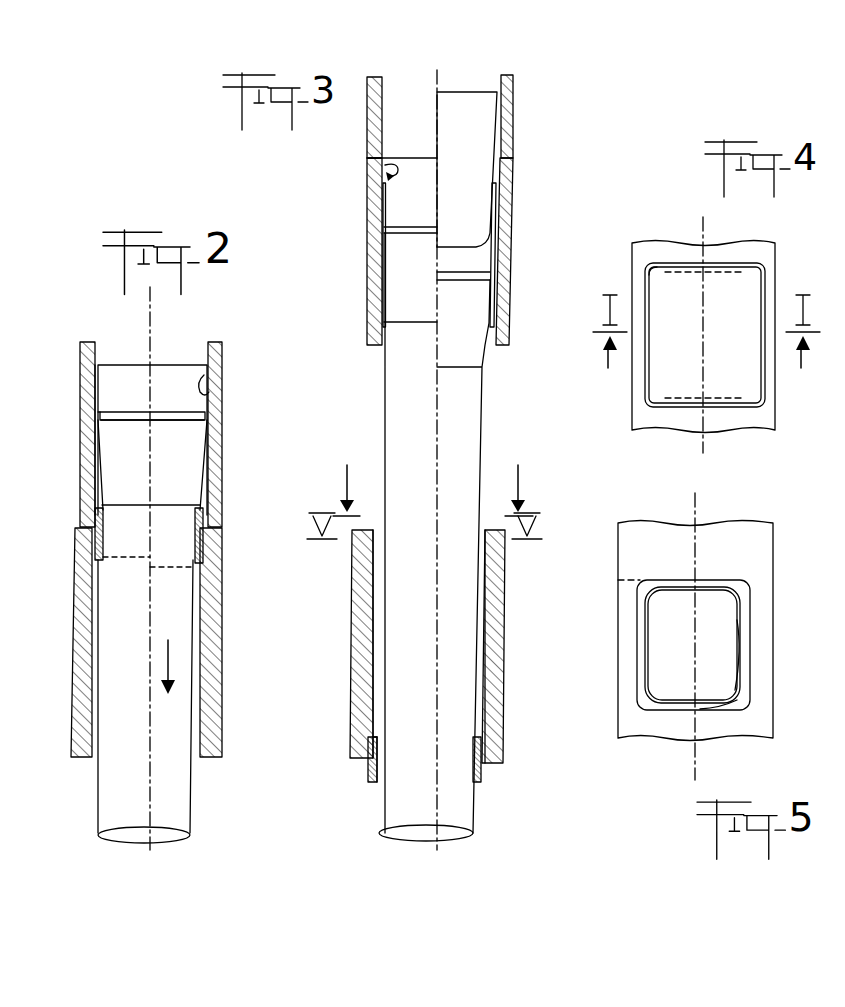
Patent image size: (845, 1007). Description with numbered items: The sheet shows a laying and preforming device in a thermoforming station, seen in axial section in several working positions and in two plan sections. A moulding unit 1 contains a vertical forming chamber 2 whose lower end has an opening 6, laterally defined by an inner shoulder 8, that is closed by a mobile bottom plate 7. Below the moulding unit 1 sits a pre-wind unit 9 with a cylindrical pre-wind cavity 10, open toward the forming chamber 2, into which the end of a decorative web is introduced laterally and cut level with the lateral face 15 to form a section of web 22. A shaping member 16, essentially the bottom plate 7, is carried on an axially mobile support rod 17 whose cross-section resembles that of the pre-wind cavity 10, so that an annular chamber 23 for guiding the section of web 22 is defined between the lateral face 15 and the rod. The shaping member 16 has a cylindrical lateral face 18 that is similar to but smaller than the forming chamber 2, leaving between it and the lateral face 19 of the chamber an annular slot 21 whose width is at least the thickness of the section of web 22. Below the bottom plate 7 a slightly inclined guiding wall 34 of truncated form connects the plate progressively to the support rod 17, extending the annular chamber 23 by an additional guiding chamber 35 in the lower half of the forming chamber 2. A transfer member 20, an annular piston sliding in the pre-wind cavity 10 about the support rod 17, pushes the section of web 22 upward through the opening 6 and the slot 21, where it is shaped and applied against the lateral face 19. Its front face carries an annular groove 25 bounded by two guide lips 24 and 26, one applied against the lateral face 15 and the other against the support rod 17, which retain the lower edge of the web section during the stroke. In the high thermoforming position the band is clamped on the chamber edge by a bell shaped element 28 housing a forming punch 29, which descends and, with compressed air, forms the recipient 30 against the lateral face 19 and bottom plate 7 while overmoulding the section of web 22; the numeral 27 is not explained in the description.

In FIG. 2, the moulding unit 1 is at (80, 395).
In FIG. 4, the moulding unit 1 is at (745, 252).
In FIG. 2, the forming chamber 2 is at (195, 352).
In FIG. 4, the forming chamber 2 is at (705, 335).
In FIG. 3, the opening 6 is at (380, 345).
In FIG. 4, the bottom plate 7 is at (705, 335).
In FIG. 4, the inner shoulder 8 is at (648, 328).
In FIG. 5, the pre-wind unit 9 is at (742, 728).
In FIG. 2, the pre-wind cavity 10 is at (253, 642).
In FIG. 5, the pre-wind cavity 10 is at (743, 590).
In FIG. 3, the lateral face 15 is at (478, 606).
In FIG. 5, the lateral face 15 is at (745, 698).
In FIG. 2, the shaping member 16 is at (164, 405).
In FIG. 3, the shaping member 16 is at (427, 224).
In FIG. 4, the shaping member 16 is at (705, 335).
In FIG. 2, the support rod 17 is at (175, 808).
In FIG. 3, the support rod 17 is at (395, 440).
In FIG. 5, the support rod 17 is at (718, 647).
In FIG. 2, the cylindrical lateral face 18 is at (115, 412).
In FIG. 3, the lateral face 19 is at (385, 168).
In FIG. 2, the transfer member 20 is at (203, 549).
In FIG. 3, the transfer member 20 is at (370, 777).
In FIG. 2, the annular slot 21 is at (97, 417).
In FIG. 2, the section of web 22 is at (212, 375).
In FIG. 3, the section of web 22 is at (382, 200).
In FIG. 5, the section of web 22 is at (712, 709).
In FIG. 2, the annular chamber 23 is at (195, 646).
In FIG. 5, the annular chamber 23 is at (643, 643).
In FIG. 3, the guide lip 24 is at (370, 738).
In FIG. 3, the annular groove 25 is at (356, 718).
In FIG. 3, the guide lip 26 is at (378, 737).
In FIG. 3, the junction line 27 is at (405, 158).
In FIG. 3, the bell shaped element 28 is at (513, 130).
In FIG. 3, the forming punch 29 is at (470, 100).
In FIG. 3, the recipient 30 is at (497, 229).
In FIG. 2, the guiding wall 34 is at (178, 462).
In FIG. 2, the additional guiding chamber 35 is at (95, 490).